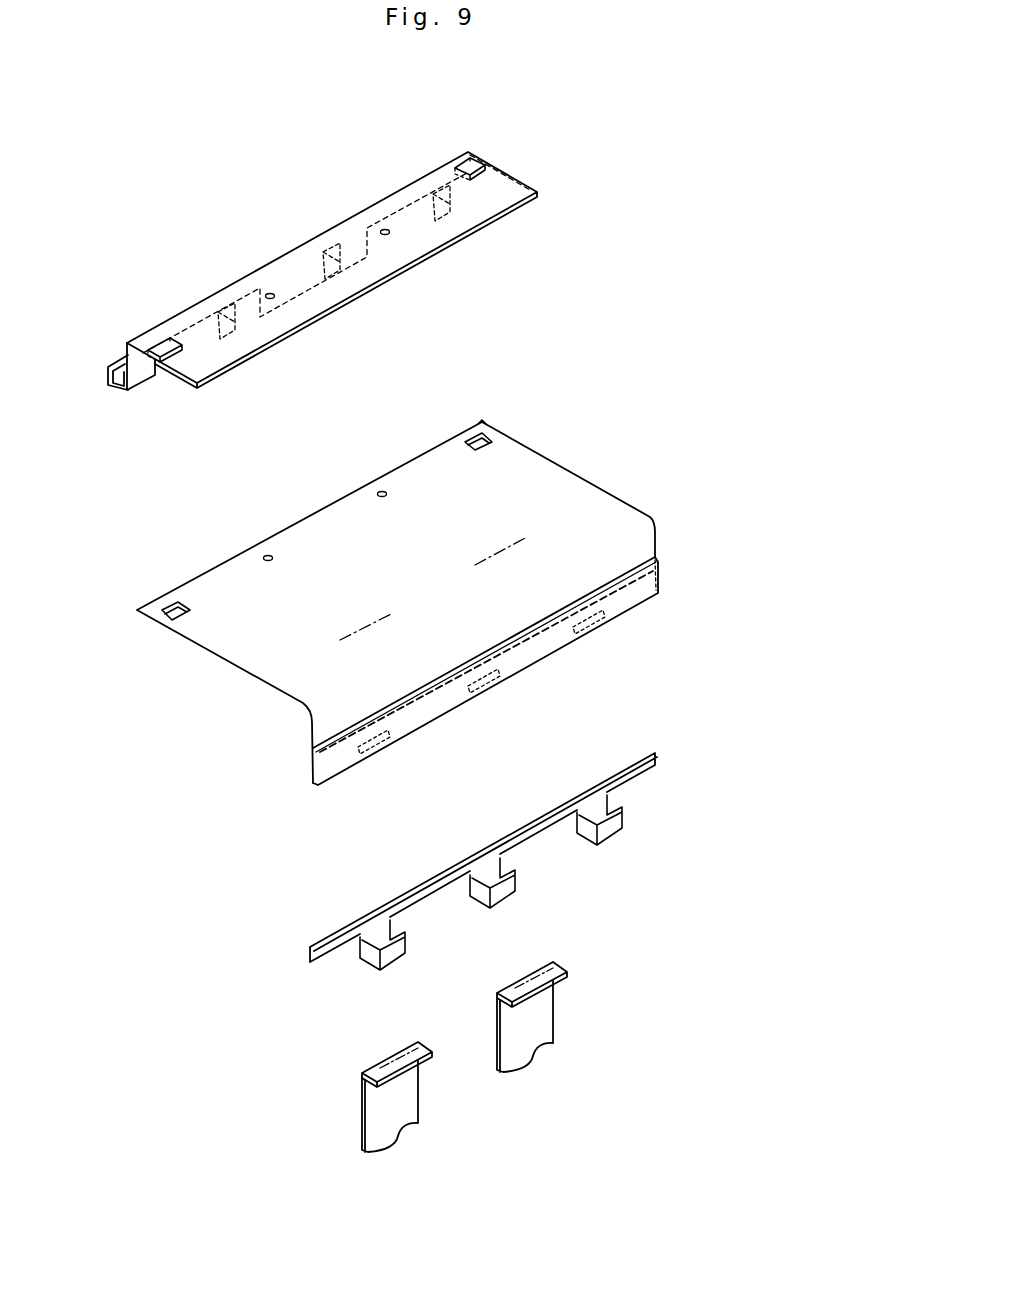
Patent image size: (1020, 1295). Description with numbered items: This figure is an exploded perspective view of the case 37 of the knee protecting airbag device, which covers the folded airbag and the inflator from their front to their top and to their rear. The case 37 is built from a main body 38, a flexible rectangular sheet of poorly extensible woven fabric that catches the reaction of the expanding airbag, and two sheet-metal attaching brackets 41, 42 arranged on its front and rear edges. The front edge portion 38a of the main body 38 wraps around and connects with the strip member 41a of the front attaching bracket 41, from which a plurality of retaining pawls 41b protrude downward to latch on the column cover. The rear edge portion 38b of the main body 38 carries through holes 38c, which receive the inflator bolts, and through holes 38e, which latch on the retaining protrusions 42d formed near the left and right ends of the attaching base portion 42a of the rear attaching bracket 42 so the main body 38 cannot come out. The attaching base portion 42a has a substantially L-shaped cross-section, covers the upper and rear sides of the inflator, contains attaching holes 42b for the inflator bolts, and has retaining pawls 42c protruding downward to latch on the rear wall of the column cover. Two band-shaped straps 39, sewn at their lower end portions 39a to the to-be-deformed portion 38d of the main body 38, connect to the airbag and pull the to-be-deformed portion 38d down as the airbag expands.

The case 37 is at (611, 377).
The main body 38 is at (605, 512).
The front edge portion 38a is at (638, 590).
The rear edge portion 38b is at (490, 420).
The through holes 38c is at (382, 497).
The to-be-deformed portion 38d is at (457, 573).
The through holes 38e is at (170, 618).
The straps 39 is at (464, 1068).
The lower end portions 39a is at (523, 982).
The attaching bracket 41 is at (655, 752).
The strip member 41a is at (648, 770).
The retaining pawls 41b is at (612, 835).
The attaching bracket 42 is at (515, 165).
The attaching base portion 42a is at (472, 218).
The attaching holes 42b is at (385, 235).
The retaining pawls 42c is at (143, 398).
The retaining protrusions 42d is at (158, 343).